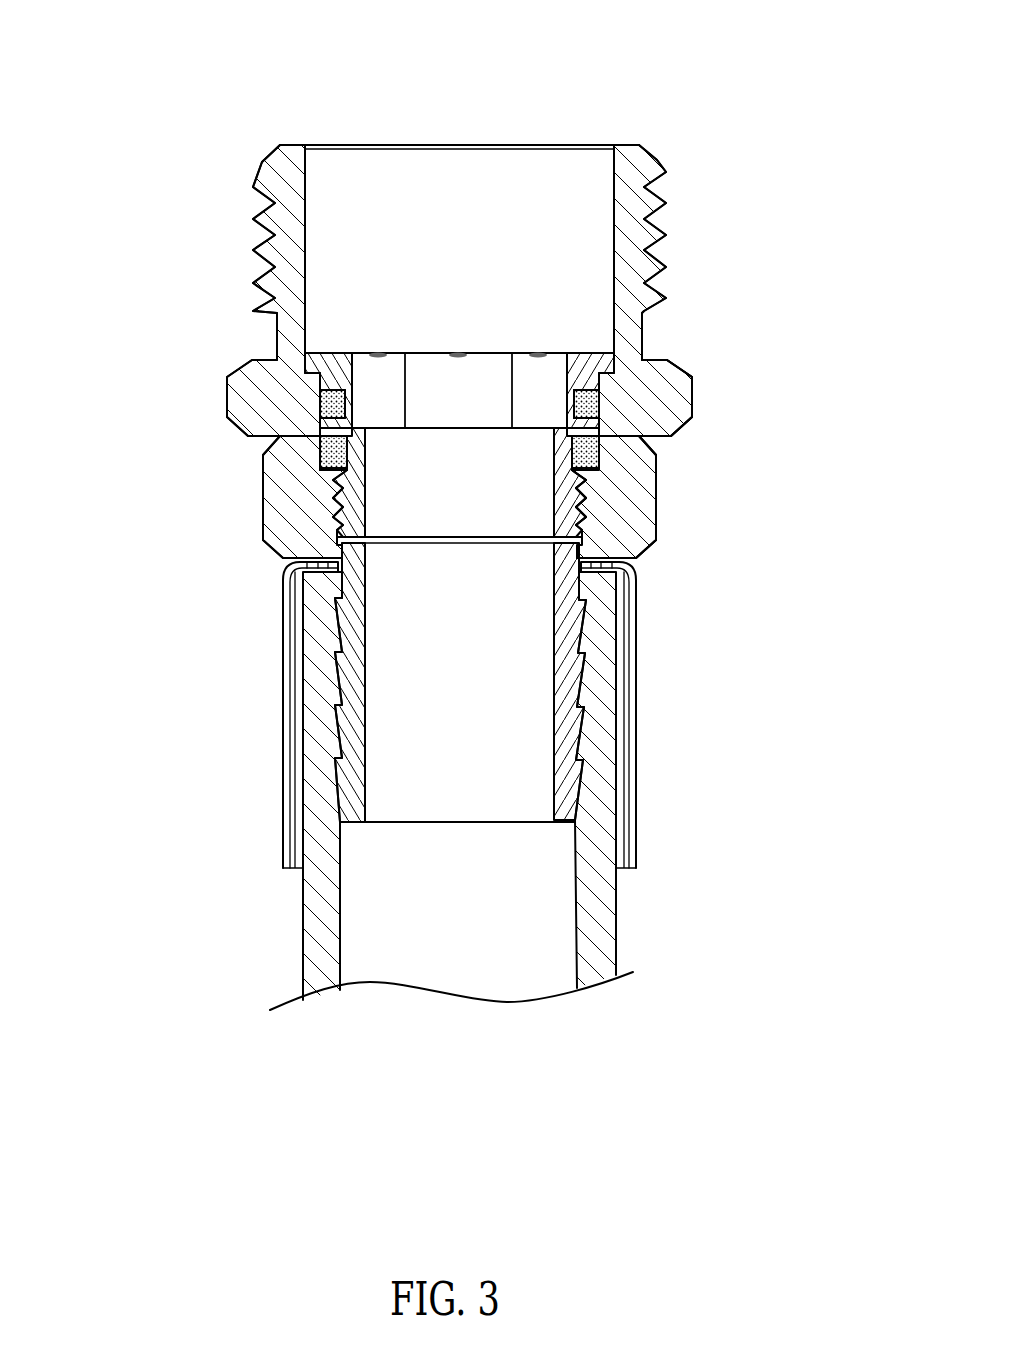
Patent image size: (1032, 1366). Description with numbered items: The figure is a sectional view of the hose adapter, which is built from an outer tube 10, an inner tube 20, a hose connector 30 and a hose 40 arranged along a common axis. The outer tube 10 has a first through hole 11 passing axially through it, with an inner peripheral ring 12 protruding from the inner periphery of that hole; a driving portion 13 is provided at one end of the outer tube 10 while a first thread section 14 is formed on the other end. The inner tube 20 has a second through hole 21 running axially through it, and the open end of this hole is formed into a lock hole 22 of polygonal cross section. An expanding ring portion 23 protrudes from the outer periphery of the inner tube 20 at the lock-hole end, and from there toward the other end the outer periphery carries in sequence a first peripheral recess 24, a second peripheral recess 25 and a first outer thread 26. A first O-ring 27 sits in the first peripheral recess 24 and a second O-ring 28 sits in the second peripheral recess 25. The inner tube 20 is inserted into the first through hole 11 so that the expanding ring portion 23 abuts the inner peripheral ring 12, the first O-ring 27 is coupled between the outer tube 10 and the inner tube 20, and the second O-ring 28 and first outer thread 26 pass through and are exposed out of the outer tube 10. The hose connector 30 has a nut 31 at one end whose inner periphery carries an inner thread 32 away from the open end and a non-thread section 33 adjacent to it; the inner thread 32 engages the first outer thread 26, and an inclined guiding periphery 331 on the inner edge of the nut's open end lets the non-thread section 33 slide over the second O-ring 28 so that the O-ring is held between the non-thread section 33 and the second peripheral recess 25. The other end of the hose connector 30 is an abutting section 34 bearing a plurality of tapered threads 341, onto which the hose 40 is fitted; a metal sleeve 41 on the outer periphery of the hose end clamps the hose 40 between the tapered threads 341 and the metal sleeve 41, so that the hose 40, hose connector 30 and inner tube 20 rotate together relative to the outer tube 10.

The outer tube 10 is at (662, 149).
The first through hole 11 is at (613, 188).
The inner peripheral ring 12 is at (600, 423).
The driving portion 13 is at (316, 415).
The first thread section 14 is at (658, 222).
The inner tube 20 is at (377, 348).
The second through hole 21 is at (545, 555).
The lock hole 22 is at (513, 382).
The expanding ring portion 23 is at (612, 354).
The first peripheral recess 24 is at (253, 362).
The second peripheral recess 25 is at (598, 490).
The first outer thread 26 is at (600, 497).
The first O-ring 27 is at (600, 392).
The second O-ring 28 is at (600, 447).
The hose connector 30 is at (277, 563).
The nut 31 is at (263, 513).
The inner thread 32 is at (616, 497).
The non-thread section 33 is at (313, 466).
The inclined guiding periphery 331 is at (280, 443).
The abutting section 34 is at (335, 726).
The tapered threads 341 is at (337, 660).
The hose 40 is at (617, 907).
The metal sleeve 41 is at (630, 682).